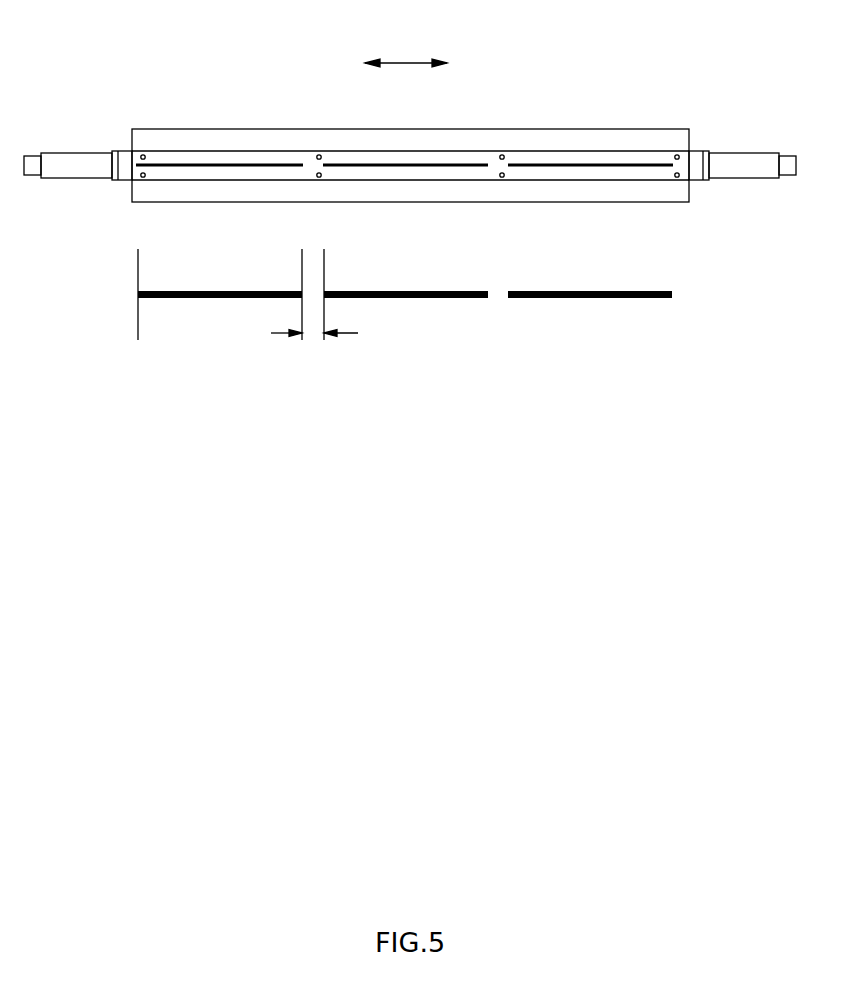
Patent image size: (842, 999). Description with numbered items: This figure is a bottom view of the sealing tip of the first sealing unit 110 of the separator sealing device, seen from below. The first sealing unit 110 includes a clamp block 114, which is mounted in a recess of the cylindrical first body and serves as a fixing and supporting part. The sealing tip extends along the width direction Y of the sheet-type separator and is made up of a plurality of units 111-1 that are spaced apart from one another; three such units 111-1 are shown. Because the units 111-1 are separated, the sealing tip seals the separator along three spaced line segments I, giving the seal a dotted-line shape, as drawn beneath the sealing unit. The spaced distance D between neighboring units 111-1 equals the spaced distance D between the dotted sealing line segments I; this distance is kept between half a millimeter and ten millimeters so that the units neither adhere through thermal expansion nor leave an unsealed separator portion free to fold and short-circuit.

The first sealing unit 110 is at (90, 28).
The units of the sealing tips 111-1 is at (223, 164).
The clamp block 114 is at (657, 157).
The width direction Y is at (406, 50).
The sealing line segments I is at (172, 298).
The spaced distance D is at (314, 309).